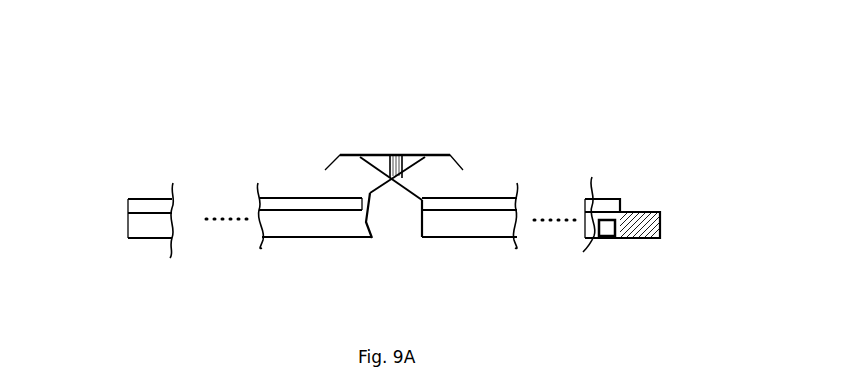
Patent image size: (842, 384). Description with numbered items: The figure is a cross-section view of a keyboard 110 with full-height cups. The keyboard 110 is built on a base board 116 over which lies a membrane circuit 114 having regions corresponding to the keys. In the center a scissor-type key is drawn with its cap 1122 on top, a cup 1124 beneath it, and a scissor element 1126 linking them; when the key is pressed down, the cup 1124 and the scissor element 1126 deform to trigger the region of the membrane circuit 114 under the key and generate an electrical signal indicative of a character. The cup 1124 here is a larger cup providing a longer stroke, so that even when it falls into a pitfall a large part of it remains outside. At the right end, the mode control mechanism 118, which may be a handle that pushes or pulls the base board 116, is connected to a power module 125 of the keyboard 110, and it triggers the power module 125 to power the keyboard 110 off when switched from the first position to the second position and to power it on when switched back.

The keyboard 110 is at (212, 68).
The membrane circuit 114 is at (147, 208).
The base board 116 is at (132, 235).
The mode control mechanism 118 is at (637, 220).
The power module 125 is at (607, 241).
The cap 1122 is at (332, 162).
The cup 1124 is at (387, 223).
The scissor element 1126 is at (372, 155).